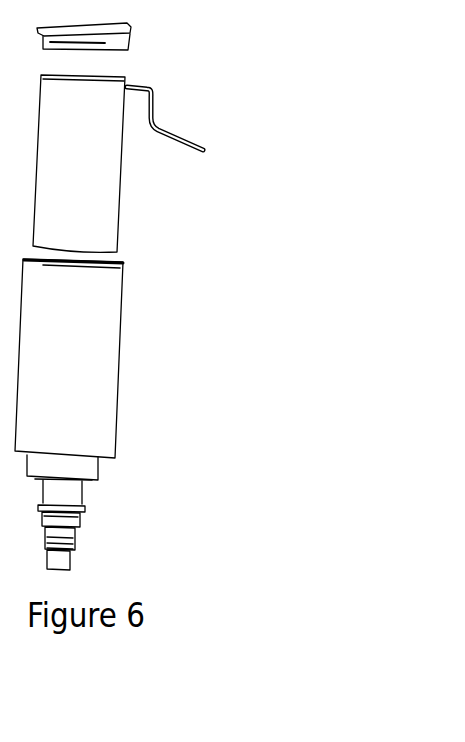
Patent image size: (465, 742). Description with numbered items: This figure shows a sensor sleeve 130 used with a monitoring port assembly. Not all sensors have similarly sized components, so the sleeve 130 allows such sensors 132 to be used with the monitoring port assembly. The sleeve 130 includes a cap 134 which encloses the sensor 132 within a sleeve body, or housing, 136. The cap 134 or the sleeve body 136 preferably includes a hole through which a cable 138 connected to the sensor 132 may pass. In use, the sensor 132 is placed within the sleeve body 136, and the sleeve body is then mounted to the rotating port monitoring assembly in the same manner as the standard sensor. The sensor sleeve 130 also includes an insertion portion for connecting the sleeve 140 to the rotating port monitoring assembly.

The sleeve 130 is at (208, 367).
The sensor 132 is at (108, 217).
The cap 134 is at (131, 42).
The sleeve body 136 is at (108, 420).
The cable 138 is at (180, 137).
The sleeve 140 is at (82, 537).